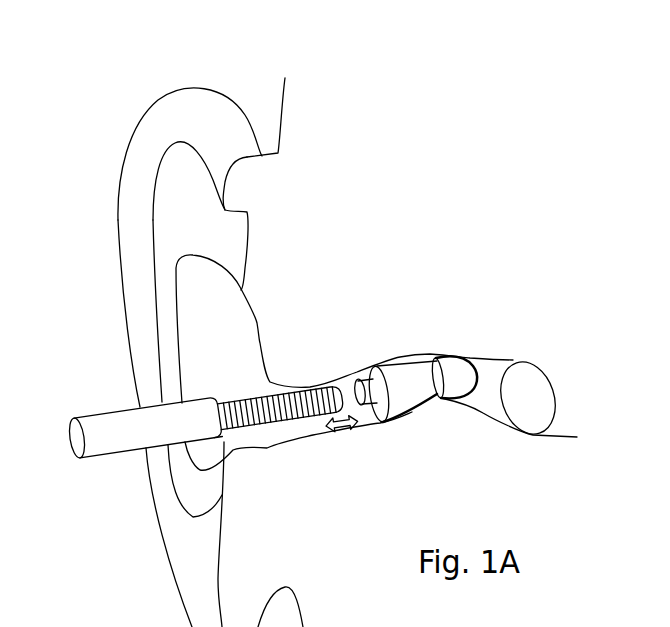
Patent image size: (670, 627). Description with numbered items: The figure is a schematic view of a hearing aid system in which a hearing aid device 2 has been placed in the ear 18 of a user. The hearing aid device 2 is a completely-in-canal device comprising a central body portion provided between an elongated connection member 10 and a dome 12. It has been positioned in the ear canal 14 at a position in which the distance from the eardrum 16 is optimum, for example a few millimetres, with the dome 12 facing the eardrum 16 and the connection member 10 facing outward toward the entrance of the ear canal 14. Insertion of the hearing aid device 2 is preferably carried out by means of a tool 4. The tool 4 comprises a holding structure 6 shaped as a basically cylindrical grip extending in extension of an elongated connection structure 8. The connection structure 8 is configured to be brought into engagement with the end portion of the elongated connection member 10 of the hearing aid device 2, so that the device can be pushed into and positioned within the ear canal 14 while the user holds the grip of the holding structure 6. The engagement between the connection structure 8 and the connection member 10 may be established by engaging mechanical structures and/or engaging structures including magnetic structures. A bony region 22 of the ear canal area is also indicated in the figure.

The hearing aid device 2 is at (407, 334).
The tool 4 is at (219, 424).
The holding structure 6 is at (132, 450).
The connection structure 8 is at (283, 421).
The connection member 10 is at (370, 385).
The dome 12 is at (457, 370).
The ear canal 14 is at (483, 398).
The eardrum 16 is at (533, 392).
The ear 18 is at (152, 85).
The bony region 22 is at (631, 626).